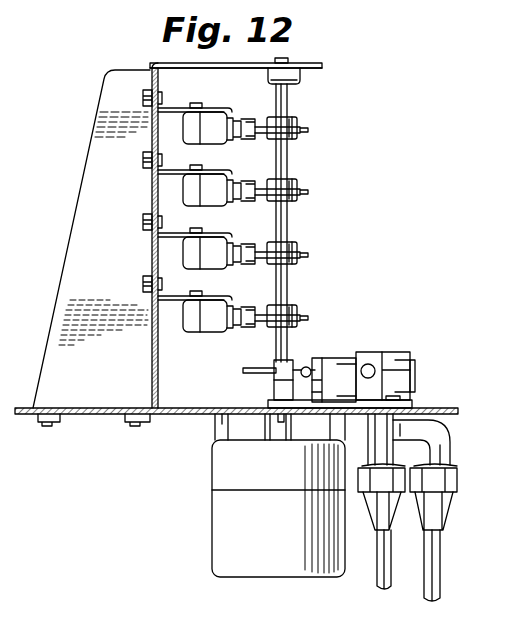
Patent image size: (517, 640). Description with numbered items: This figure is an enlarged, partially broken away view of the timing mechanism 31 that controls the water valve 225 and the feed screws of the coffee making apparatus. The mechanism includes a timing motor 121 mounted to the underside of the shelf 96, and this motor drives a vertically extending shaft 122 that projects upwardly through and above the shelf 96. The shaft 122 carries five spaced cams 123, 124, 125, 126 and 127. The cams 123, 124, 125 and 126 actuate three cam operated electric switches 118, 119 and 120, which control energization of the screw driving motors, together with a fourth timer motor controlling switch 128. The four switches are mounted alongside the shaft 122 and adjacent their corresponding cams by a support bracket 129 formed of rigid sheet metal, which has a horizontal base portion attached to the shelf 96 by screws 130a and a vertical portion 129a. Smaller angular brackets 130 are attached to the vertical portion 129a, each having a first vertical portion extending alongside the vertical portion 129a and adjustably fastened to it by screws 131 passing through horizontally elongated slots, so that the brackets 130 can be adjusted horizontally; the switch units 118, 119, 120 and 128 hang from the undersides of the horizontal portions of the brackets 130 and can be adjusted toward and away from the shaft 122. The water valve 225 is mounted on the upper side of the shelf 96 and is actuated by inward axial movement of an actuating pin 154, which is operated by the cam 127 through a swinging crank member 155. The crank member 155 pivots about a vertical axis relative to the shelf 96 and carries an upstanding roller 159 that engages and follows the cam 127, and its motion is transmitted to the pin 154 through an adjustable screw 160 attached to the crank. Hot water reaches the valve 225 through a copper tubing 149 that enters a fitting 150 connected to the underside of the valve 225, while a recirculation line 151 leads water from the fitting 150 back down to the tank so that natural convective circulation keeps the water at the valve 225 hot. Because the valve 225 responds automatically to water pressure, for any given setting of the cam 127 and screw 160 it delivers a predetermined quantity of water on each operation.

The timing unit 31 is at (349, 80).
The shelf 96 is at (175, 415).
The cam operated electric switch 118 is at (222, 116).
The cam operated electric switch 119 is at (222, 178).
The cam operated electric switch 120 is at (222, 241).
The timing motor 121 is at (208, 470).
The shaft 122 is at (298, 282).
The cam 123 is at (306, 133).
The cam 124 is at (312, 193).
The cam 125 is at (316, 256).
The cam 126 is at (316, 318).
The cam 127 is at (254, 355).
The timer motor controlling switch 128 is at (222, 304).
The support bracket 129 is at (60, 290).
The vertical portion 129a is at (148, 352).
The angular bracket 130 is at (180, 103).
The screw 130a is at (126, 427).
The screw 131 is at (142, 156).
The copper tubing 149 is at (436, 602).
The fitting 150 is at (446, 450).
The recirculation line 151 is at (373, 584).
The actuating pin 154 is at (349, 357).
The crank member 155 is at (296, 416).
The roller 159 is at (268, 380).
The adjustable screw 160 is at (303, 360).
The water valve 225 is at (412, 384).